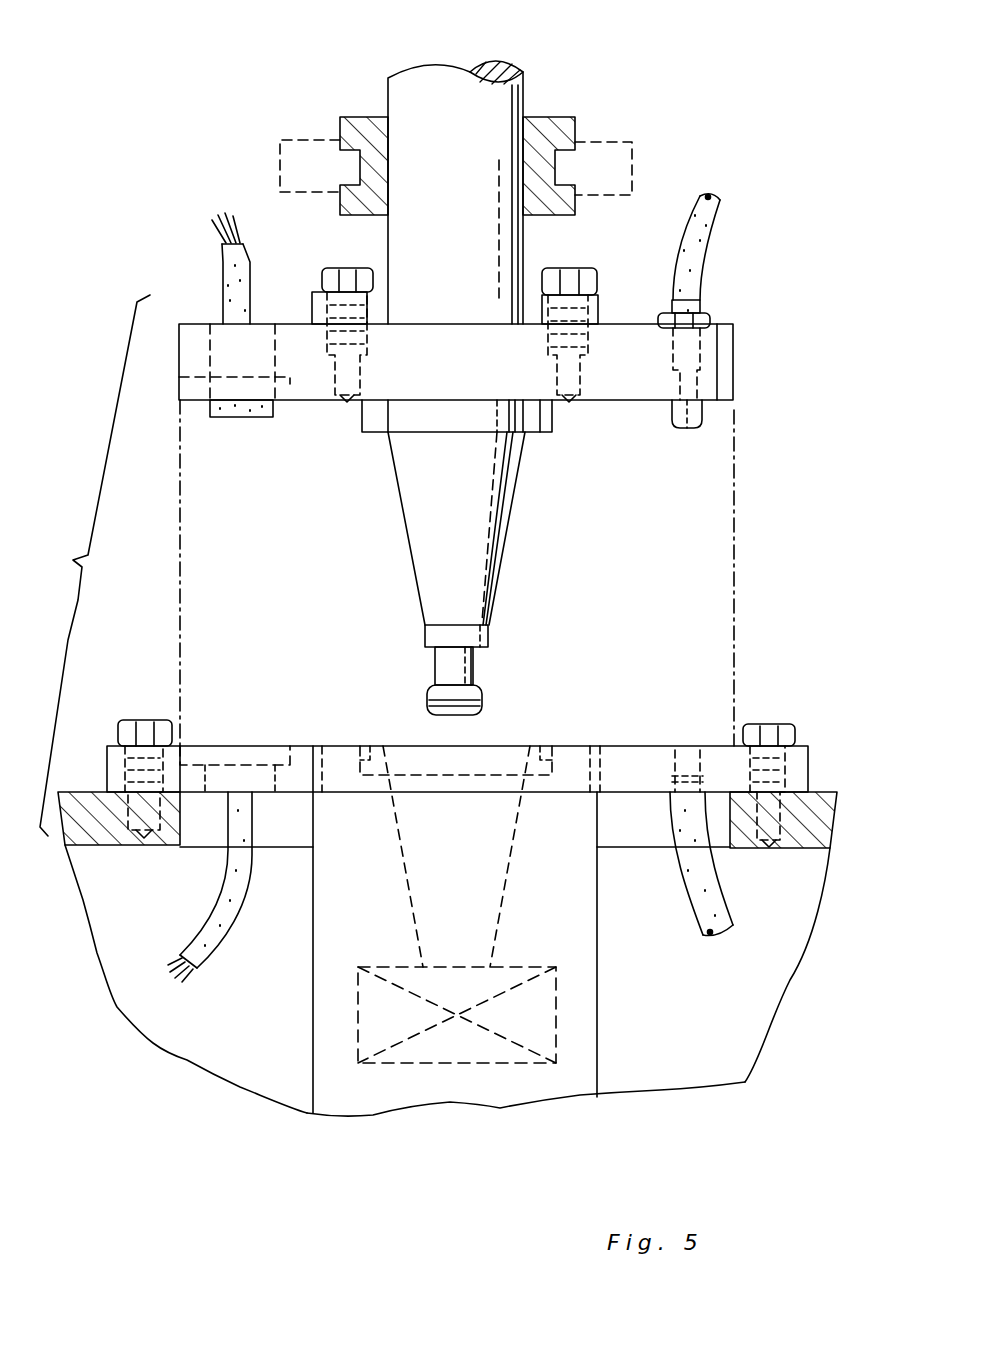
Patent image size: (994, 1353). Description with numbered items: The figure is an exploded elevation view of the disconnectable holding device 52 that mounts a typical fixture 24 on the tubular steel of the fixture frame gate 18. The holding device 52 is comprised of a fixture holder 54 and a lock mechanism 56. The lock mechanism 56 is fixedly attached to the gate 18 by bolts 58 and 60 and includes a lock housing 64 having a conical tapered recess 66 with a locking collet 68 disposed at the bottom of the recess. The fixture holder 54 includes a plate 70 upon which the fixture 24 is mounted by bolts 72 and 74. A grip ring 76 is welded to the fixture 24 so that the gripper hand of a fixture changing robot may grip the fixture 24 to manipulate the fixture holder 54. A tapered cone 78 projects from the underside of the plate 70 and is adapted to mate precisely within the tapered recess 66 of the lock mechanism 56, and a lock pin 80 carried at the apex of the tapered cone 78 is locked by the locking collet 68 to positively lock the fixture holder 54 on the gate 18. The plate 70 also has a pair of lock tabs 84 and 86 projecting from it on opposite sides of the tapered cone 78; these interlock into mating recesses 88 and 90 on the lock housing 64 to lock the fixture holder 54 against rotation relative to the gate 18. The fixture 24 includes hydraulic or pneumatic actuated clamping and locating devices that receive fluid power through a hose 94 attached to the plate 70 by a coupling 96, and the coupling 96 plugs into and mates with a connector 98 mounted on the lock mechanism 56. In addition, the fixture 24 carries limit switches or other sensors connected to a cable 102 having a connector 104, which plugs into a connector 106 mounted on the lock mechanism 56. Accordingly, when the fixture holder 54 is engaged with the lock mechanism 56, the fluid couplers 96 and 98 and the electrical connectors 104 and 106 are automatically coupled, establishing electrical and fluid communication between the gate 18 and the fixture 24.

The fixture frame gate 18 is at (802, 842).
The fixture 24 is at (448, 83).
The disconnectable holding device 52 is at (210, 544).
The fixture holder 54 is at (318, 402).
The lock mechanism 56 is at (306, 741).
The bolt 58 is at (137, 720).
The bolt 60 is at (763, 723).
The lock housing 64 is at (580, 915).
The conical tapered recess 66 is at (513, 842).
The locking collet 68 is at (548, 1020).
The plate 70 is at (627, 392).
The bolt 72 is at (350, 268).
The bolt 74 is at (572, 268).
The grip ring 76 is at (368, 116).
The tapered cone 78 is at (297, 173).
The lock pin 80 is at (462, 682).
The lock tab 84 is at (372, 418).
The lock tab 86 is at (535, 420).
The mating recess 88 is at (385, 744).
The mating recess 90 is at (545, 743).
The hose 94 is at (700, 268).
The coupling 96 is at (672, 305).
The connector 98 is at (677, 750).
The cable 102 is at (223, 263).
The connector 104 is at (220, 413).
The connector 106 is at (238, 750).